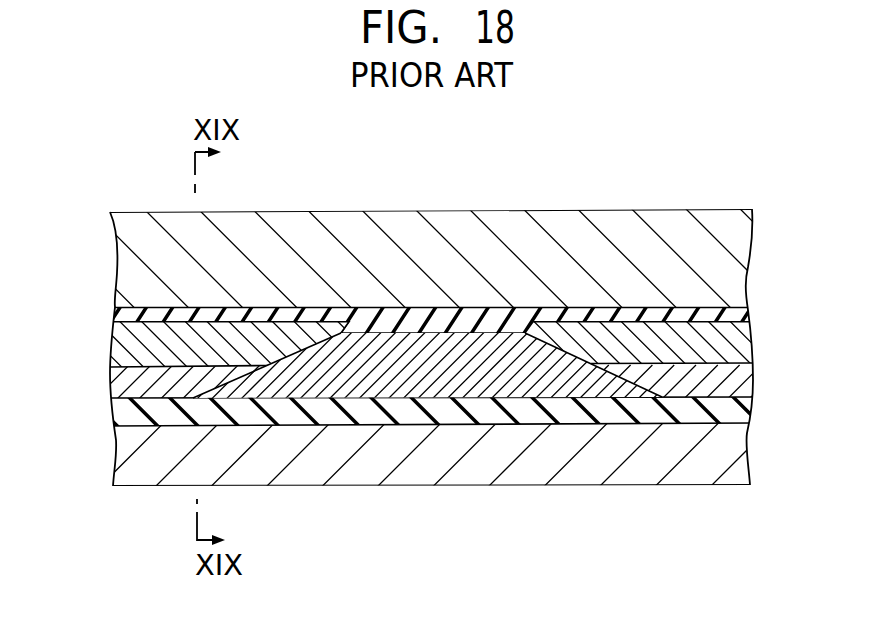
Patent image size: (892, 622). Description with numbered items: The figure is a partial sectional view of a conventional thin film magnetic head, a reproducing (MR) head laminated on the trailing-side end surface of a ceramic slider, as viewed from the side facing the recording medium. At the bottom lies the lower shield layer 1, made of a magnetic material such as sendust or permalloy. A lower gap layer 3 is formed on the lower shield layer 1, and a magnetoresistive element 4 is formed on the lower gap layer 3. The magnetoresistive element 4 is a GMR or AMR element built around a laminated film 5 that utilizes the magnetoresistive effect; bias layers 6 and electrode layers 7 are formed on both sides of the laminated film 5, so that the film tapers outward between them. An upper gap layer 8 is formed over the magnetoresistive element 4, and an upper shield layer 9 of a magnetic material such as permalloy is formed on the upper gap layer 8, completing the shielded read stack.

The lower shield layer 1 is at (598, 452).
The lower gap layer 3 is at (458, 412).
The magnetoresistive element 4 is at (491, 322).
The laminated film 5 is at (401, 352).
The bias layers 6 is at (128, 385).
The electrode layers 7 is at (128, 346).
The upper gap layer 8 is at (745, 311).
The upper shield layer 9 is at (662, 258).